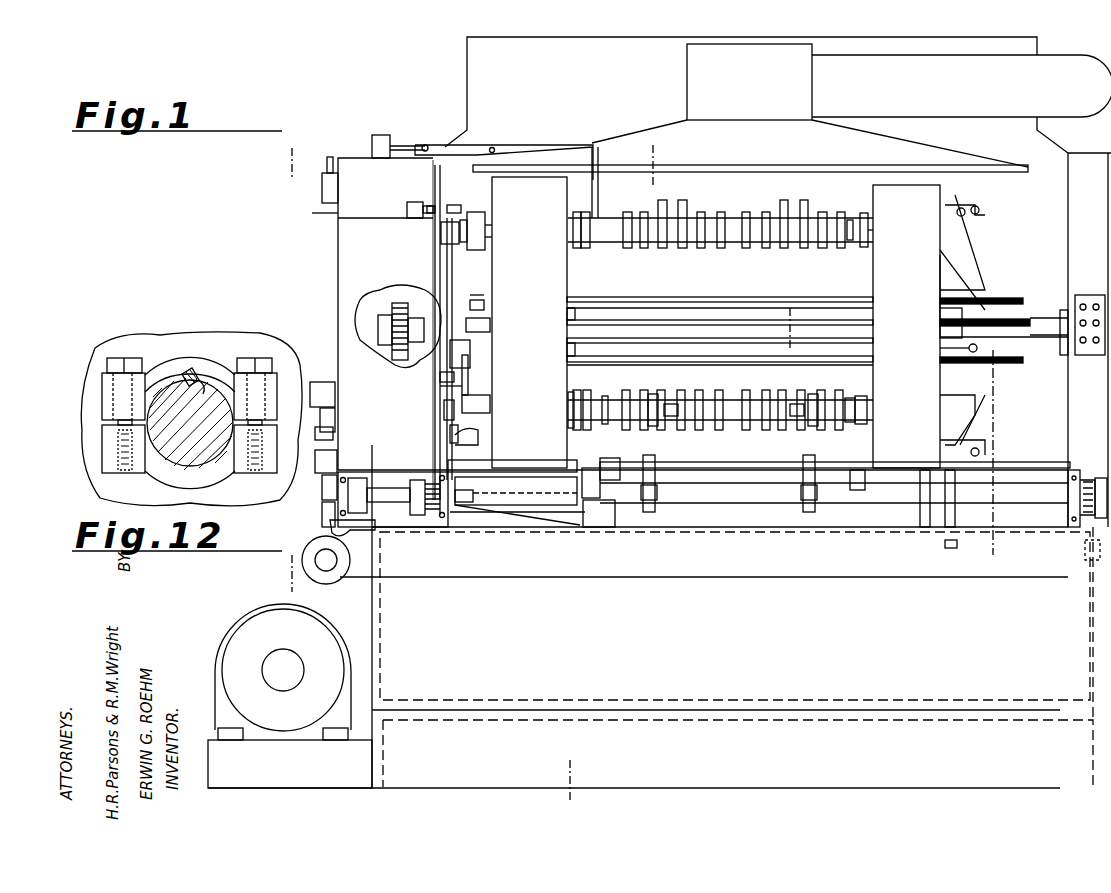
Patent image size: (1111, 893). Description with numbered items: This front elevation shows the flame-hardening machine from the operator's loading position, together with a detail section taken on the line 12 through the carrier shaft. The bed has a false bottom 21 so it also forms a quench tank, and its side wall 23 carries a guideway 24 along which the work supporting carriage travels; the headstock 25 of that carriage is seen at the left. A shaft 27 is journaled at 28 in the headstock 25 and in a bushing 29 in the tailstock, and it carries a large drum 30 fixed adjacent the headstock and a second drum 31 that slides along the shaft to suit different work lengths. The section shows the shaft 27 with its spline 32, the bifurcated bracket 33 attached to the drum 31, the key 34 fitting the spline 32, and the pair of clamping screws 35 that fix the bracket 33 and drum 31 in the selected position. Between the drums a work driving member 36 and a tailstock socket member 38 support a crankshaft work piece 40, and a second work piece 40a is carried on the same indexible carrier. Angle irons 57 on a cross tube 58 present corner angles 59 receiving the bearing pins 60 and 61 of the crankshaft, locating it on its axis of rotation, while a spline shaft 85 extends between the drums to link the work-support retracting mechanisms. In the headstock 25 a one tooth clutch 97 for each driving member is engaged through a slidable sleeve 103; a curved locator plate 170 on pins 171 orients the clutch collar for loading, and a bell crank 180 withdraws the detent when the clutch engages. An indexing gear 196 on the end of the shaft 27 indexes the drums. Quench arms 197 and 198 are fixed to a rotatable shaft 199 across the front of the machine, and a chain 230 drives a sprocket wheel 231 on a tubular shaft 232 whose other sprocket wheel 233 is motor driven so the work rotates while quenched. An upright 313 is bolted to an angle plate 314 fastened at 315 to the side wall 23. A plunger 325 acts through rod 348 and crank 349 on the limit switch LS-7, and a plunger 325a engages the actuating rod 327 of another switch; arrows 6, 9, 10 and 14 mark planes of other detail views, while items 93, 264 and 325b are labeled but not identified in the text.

In FIG. 1, the section line 6- 6 is at (292, 148).
In FIG. 1, the section line 9- 9 is at (630, 145).
In FIG. 1, the vertical guide rod 10 is at (433, 167).
In FIG. 1, the section line 12— 12 is at (790, 308).
In FIG. 1, the section line 14- 14 is at (993, 362).
In FIG. 1, the false bottom 21 is at (1060, 715).
In FIG. 1, the side wall 23 is at (1090, 527).
In FIG. 1, the guideway 24 is at (332, 531).
In FIG. 1, the headstock 25 is at (338, 245).
In FIG. 1, the shaft 27 is at (1050, 333).
In FIG. 12, the shaft 27 is at (170, 380).
In FIG. 1, the journal 28 is at (424, 310).
In FIG. 1, the bushing 29 is at (1068, 320).
In FIG. 1, the large drum 30 is at (567, 274).
In FIG. 1, the second drum 31 is at (873, 275).
In FIG. 12, the second drum 31 is at (140, 345).
In FIG. 12, the spline 32 is at (205, 390).
In FIG. 1, the bifurcated bracket 33 is at (858, 338).
In FIG. 12, the bifurcated bracket 33 is at (102, 410).
In FIG. 12, the key 34 is at (190, 372).
In FIG. 12, the clamping screws 35 is at (120, 358).
In FIG. 1, the work driving member 36 is at (578, 400).
In FIG. 1, the tailstock socket member 38 is at (850, 398).
In FIG. 1, the work piece 40 is at (734, 403).
In FIG. 1, the work piece 40a is at (735, 214).
In FIG. 1, the angle irons 57 is at (655, 449).
In FIG. 1, the cross tube 58 is at (684, 504).
In FIG. 1, the corner angle 59 is at (652, 398).
In FIG. 1, the bearing pin 60 is at (672, 404).
In FIG. 1, the bearing pin 61 is at (796, 403).
In FIG. 1, the spline shaft 85 is at (663, 332).
In FIG. 1, the lever 93 is at (979, 452).
In FIG. 1, the one tooth clutch 97 is at (440, 245).
In FIG. 1, the slidable sleeve 103 is at (447, 408).
In FIG. 1, the curved locator plate 170 is at (445, 386).
In FIG. 1, the pins 171 is at (440, 378).
In FIG. 1, the bell crank 180 is at (468, 445).
In FIG. 1, the indexing gear 196 is at (385, 302).
In FIG. 1, the arm 197 is at (618, 527).
In FIG. 1, the arm 198 is at (852, 527).
In FIG. 1, the rotatable shaft 199 is at (768, 462).
In FIG. 1, the chain 230 is at (578, 514).
In FIG. 1, the sprocket wheel 231 is at (590, 460).
In FIG. 1, the tubular shaft 232 is at (540, 465).
In FIG. 1, the sprocket wheel 233 is at (440, 464).
In FIG. 1, the pulley 264 is at (314, 580).
In FIG. 1, the upright 313 is at (945, 519).
In FIG. 1, the angle plate 314 is at (968, 542).
In FIG. 1, the fastening 315 is at (1090, 560).
In FIG. 1, the plunger 325 is at (490, 325).
In FIG. 1, the plunger 325a is at (470, 385).
In FIG. 1, the switch 325b is at (484, 306).
In FIG. 1, the actuating rod 327 is at (441, 264).
In FIG. 1, the rod 348 is at (462, 275).
In FIG. 1, the crank 349 is at (442, 210).
In FIG. 1, the limit switch LS-7 is at (408, 204).